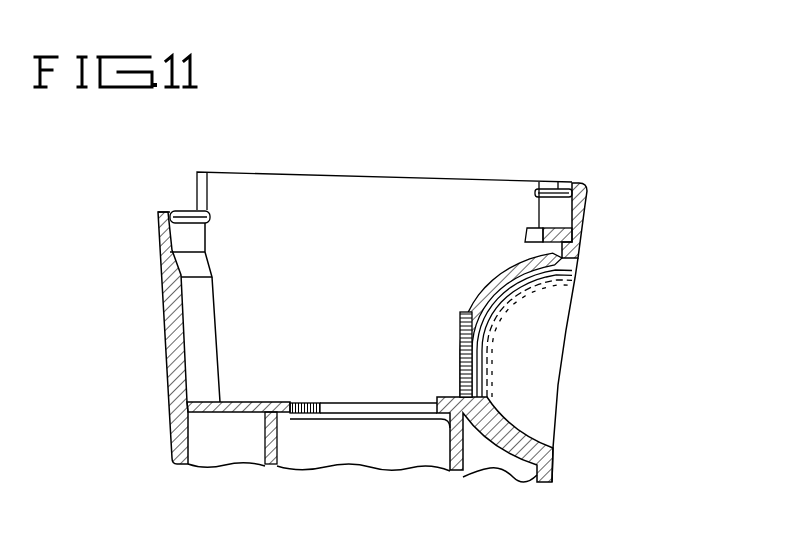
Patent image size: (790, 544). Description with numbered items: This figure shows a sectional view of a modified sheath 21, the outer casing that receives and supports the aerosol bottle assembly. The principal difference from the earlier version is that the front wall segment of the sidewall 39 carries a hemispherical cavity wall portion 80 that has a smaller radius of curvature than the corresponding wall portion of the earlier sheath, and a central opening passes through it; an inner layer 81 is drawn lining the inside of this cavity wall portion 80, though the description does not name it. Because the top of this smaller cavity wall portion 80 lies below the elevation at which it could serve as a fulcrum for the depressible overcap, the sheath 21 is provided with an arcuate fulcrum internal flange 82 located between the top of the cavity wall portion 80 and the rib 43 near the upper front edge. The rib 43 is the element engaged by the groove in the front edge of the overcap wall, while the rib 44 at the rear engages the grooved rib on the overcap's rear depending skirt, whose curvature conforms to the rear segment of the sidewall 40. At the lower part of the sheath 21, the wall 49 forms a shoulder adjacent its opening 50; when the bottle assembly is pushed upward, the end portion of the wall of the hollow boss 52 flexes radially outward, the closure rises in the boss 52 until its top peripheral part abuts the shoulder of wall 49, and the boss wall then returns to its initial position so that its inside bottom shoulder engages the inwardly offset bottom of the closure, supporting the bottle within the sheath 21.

The sheath 21 is at (332, 332).
The sidewall 39 is at (165, 366).
The sidewall 40 is at (314, 177).
The rib 43 is at (556, 191).
The rib 44 is at (182, 210).
The wall 49 is at (242, 403).
The opening 50 is at (304, 404).
The hollow boss 52 is at (266, 448).
The hemispherical cavity wall portion 80 is at (505, 268).
The inner dome layer 81 is at (465, 318).
The arcuate fulcrum internal flange 82 is at (550, 231).